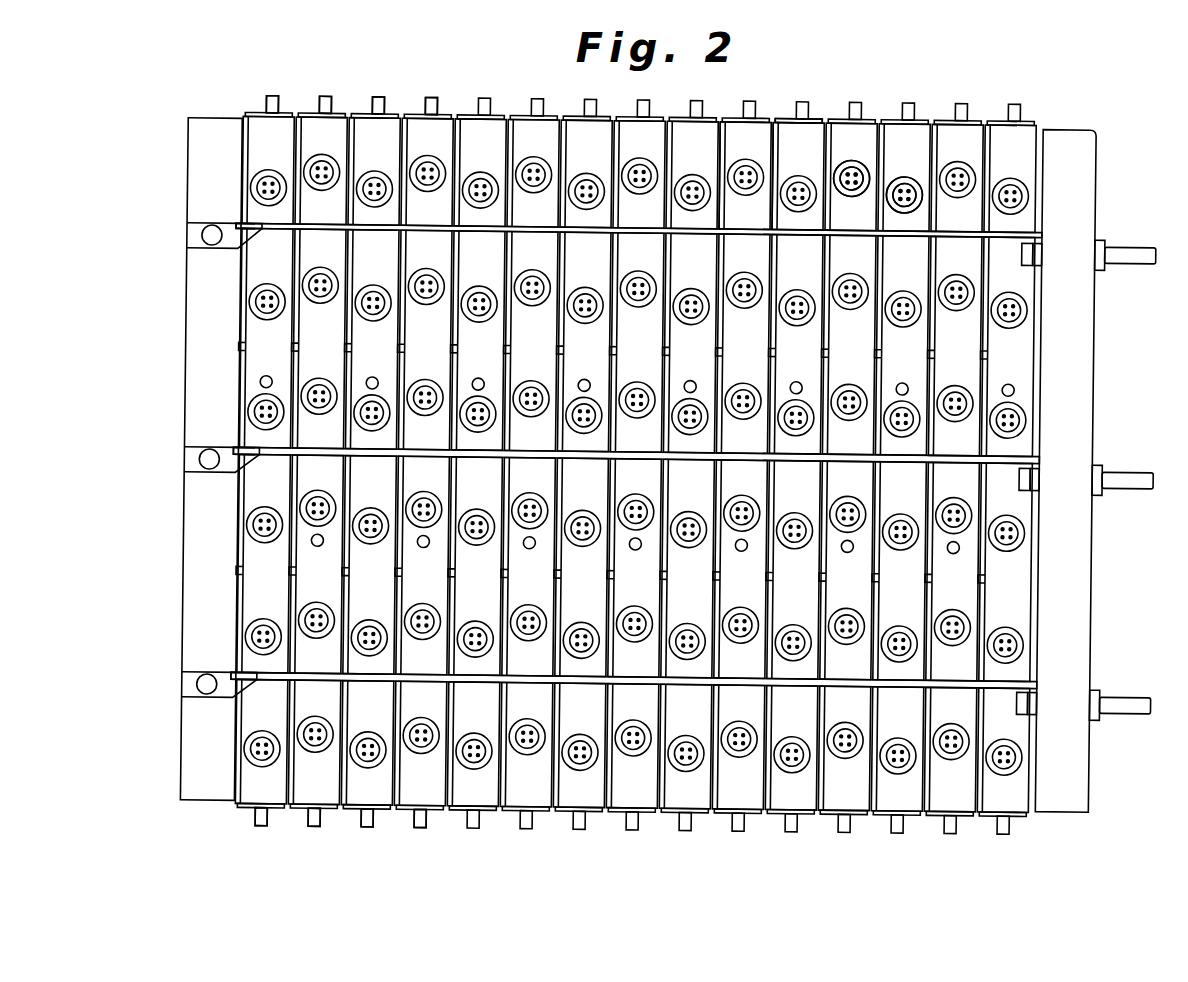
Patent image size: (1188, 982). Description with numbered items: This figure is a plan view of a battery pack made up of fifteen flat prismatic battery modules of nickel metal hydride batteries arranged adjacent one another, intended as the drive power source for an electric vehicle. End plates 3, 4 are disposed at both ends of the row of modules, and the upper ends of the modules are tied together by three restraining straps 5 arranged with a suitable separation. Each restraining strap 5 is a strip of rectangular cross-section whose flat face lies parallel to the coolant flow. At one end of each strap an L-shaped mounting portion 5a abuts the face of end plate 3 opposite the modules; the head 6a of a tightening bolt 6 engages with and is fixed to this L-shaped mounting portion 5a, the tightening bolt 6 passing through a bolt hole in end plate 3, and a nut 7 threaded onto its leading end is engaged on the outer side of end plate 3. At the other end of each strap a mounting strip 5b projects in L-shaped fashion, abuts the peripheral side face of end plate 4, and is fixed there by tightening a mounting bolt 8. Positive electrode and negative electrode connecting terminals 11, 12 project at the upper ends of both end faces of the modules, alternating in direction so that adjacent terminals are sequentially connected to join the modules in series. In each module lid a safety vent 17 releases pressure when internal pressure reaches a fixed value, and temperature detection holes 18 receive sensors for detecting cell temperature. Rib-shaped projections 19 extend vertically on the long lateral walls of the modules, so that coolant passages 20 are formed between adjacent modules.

The end plate 3 is at (1074, 573).
The end plate 4 is at (204, 565).
The restraining strap 5 is at (651, 684).
The L-shaped mounting portion 5a is at (1034, 710).
The mounting strip 5b is at (195, 683).
The tightening bolt 6 is at (1148, 696).
The head 6a is at (1030, 694).
The nut 7 is at (1105, 685).
The mounting bolt 8 is at (210, 692).
The positive electrode connecting terminal 11 is at (386, 845).
The negative electrode connecting terminal 12 is at (439, 845).
The safety vent 17 is at (898, 180).
The temperature detection hole 18 is at (1015, 383).
The rib-shaped projection 19 is at (769, 116).
The coolant passage 20 is at (772, 158).